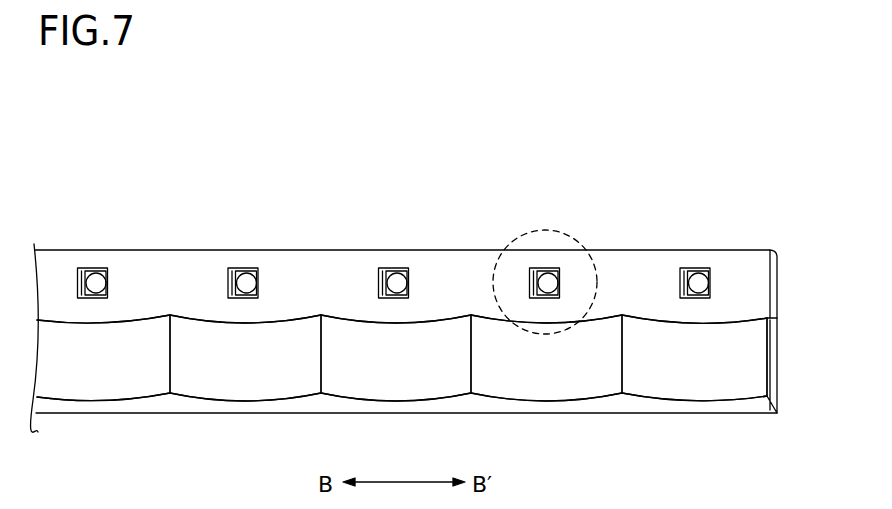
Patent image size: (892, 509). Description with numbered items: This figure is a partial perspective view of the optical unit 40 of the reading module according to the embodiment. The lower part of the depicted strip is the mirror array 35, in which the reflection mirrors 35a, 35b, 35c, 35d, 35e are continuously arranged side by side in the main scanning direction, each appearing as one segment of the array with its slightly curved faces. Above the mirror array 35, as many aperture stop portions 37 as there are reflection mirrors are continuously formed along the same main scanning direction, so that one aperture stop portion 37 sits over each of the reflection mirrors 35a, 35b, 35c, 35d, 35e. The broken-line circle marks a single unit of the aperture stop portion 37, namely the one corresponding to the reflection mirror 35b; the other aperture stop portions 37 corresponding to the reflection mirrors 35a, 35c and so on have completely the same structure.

The optical unit 40 is at (745, 214).
The mirror array 35 is at (756, 361).
The reflection mirror 35a is at (690, 385).
The reflection mirror 35b is at (545, 385).
The reflection mirror 35c is at (395, 385).
The reflection mirror 35d is at (244, 385).
The reflection mirror 35e is at (93, 385).
The aperture stop portion 37 is at (87, 266).